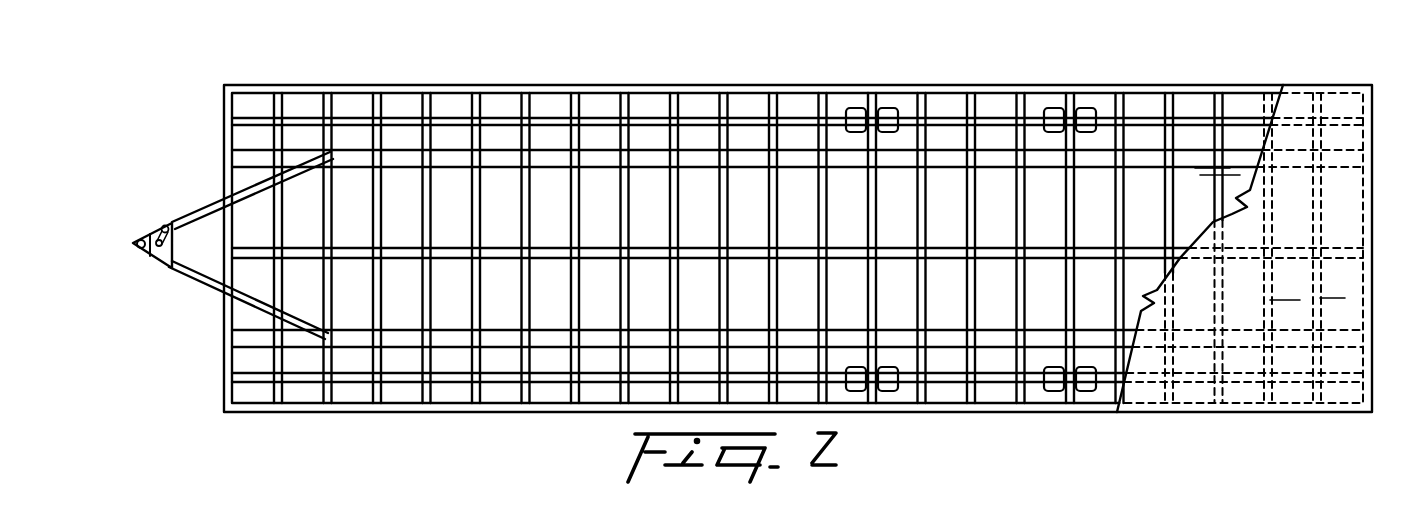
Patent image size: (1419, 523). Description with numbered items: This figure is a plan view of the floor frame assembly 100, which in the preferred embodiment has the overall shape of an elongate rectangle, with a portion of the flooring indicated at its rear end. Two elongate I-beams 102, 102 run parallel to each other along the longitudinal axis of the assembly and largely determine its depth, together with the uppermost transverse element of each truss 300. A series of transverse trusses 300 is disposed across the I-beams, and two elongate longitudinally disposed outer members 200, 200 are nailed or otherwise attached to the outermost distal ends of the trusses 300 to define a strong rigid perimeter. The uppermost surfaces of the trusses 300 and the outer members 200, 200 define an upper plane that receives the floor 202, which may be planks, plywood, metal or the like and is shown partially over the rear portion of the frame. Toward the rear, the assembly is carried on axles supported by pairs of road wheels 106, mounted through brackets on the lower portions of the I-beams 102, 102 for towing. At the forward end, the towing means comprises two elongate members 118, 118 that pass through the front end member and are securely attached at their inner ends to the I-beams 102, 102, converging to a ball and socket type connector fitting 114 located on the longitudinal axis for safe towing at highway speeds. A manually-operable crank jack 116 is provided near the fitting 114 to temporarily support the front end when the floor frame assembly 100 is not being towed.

The floor frame assembly 100 is at (952, 70).
The I-beams 102 is at (456, 157).
The road wheels 106 is at (860, 110).
The connector fitting 114 is at (133, 247).
The crank jack 116 is at (160, 228).
The elongate members 118 is at (197, 215).
The outer members 200 is at (314, 86).
The floor 202 is at (1252, 413).
The truss 300 is at (583, 110).